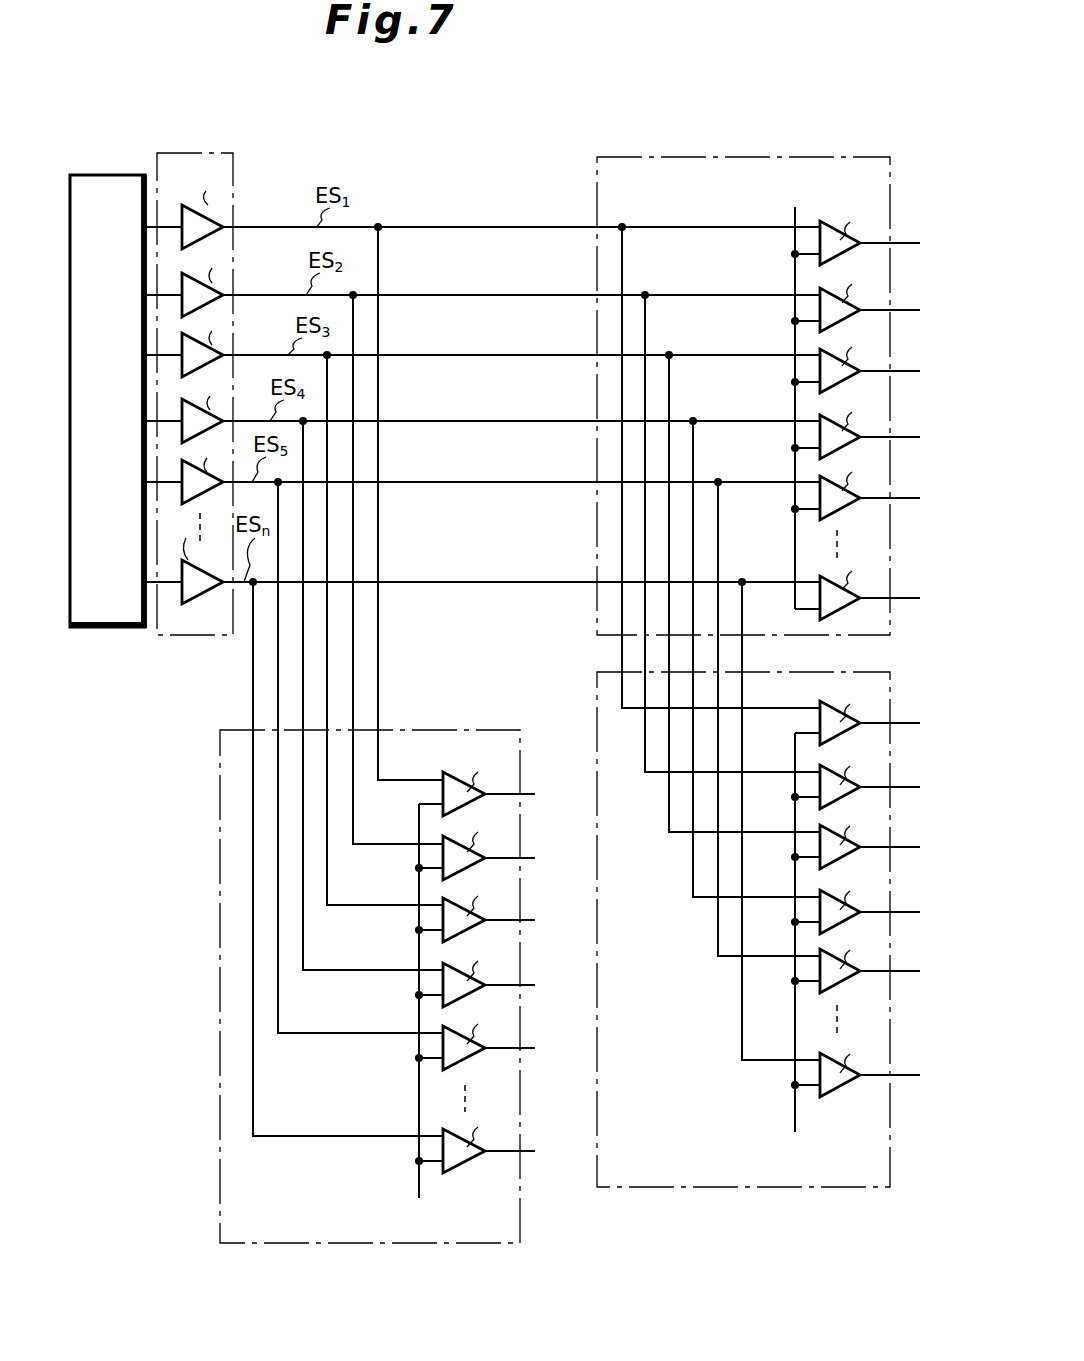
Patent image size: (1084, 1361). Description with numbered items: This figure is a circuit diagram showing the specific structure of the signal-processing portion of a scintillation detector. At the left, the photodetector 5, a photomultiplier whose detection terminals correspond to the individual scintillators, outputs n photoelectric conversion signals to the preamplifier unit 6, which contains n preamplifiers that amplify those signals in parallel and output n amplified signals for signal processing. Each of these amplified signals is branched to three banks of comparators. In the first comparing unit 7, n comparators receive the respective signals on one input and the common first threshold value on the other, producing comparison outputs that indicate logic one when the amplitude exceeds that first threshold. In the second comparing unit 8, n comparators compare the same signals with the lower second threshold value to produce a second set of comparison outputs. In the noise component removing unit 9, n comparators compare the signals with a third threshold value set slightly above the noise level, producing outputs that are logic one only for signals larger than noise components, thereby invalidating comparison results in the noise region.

The photodetector 5 is at (108, 175).
The preamplifier unit 6 is at (218, 153).
The first comparing unit 7 is at (797, 157).
The second comparing unit 8 is at (597, 680).
The noise component removing unit 9 is at (462, 730).